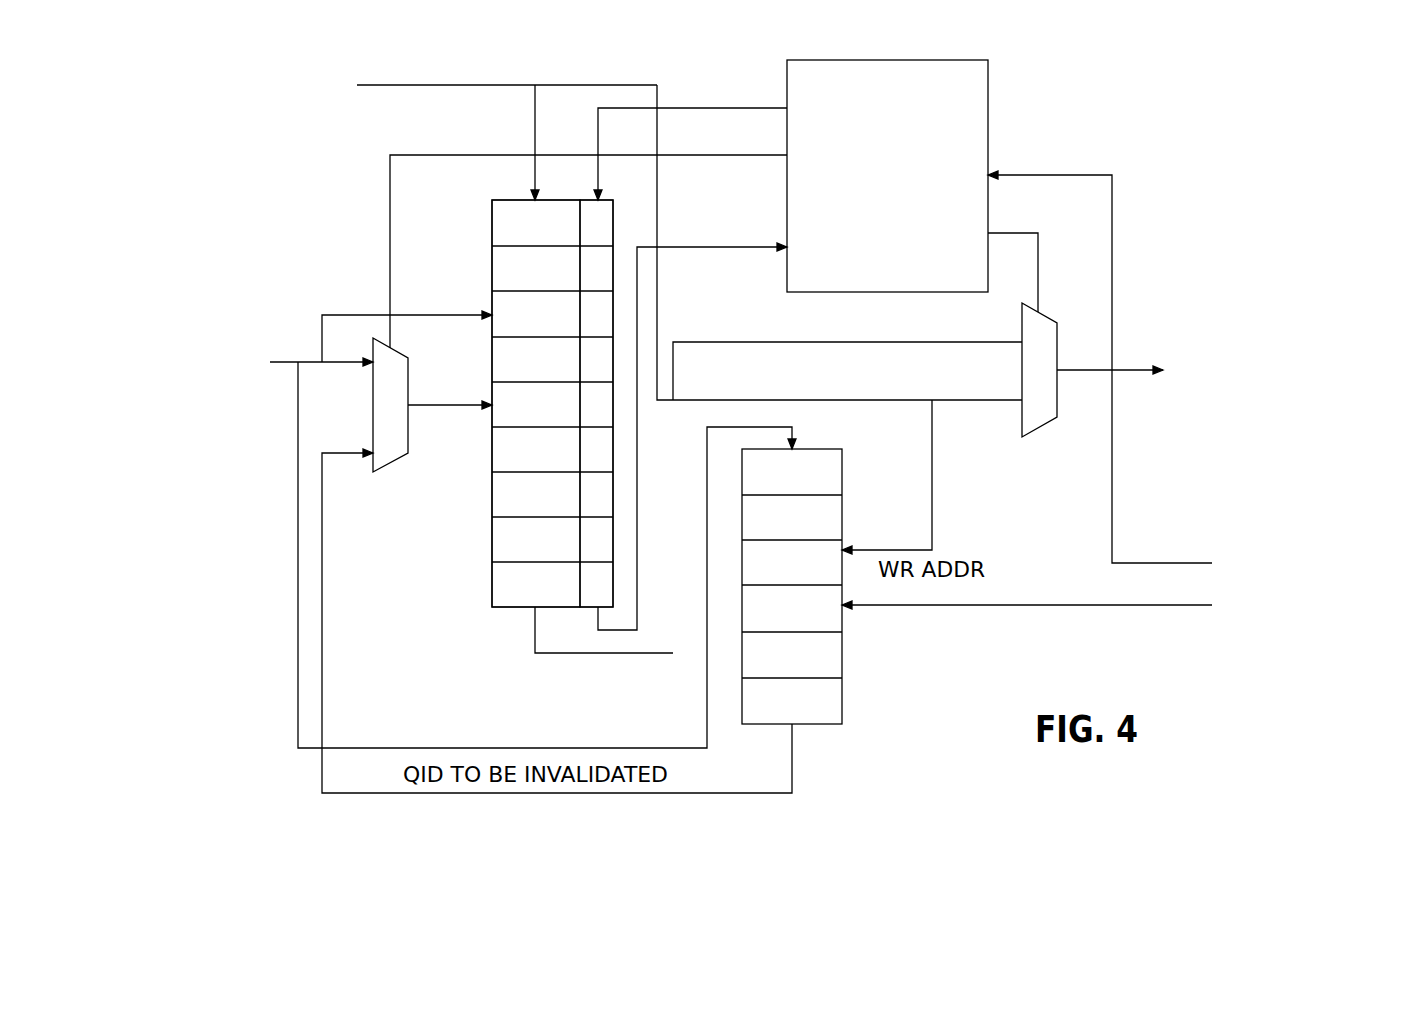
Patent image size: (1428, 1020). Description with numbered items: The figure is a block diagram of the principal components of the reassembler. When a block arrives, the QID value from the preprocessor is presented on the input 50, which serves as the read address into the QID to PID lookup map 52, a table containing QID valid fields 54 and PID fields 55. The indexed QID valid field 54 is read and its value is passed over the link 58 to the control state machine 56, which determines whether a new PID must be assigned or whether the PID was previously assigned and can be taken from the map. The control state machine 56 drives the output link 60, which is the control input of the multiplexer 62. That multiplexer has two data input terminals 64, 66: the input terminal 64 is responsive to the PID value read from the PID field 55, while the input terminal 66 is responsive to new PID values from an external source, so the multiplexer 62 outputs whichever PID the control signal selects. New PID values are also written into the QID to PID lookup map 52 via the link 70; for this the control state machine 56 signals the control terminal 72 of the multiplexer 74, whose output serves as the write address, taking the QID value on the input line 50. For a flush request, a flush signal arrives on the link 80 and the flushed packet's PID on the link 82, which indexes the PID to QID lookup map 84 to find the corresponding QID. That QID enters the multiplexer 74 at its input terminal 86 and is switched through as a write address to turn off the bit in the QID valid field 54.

The QID input 50 is at (292, 362).
The QID to PID lookup map 52 is at (472, 573).
The QID valid field 54 is at (613, 210).
The PID field 55 is at (492, 217).
The control state machine 56 is at (887, 60).
The link 58 is at (704, 250).
The output link 60 is at (1020, 233).
The multiplexer 62 is at (1047, 315).
The input terminal 64 is at (766, 342).
The input terminal 66 is at (838, 400).
The link 70 is at (535, 117).
The control terminal 72 is at (390, 222).
The multiplexer 74 is at (392, 462).
The link 80 is at (1173, 563).
The link 82 is at (1067, 605).
The PID to QID lookup map 84 is at (843, 686).
The input terminal 86 is at (322, 641).